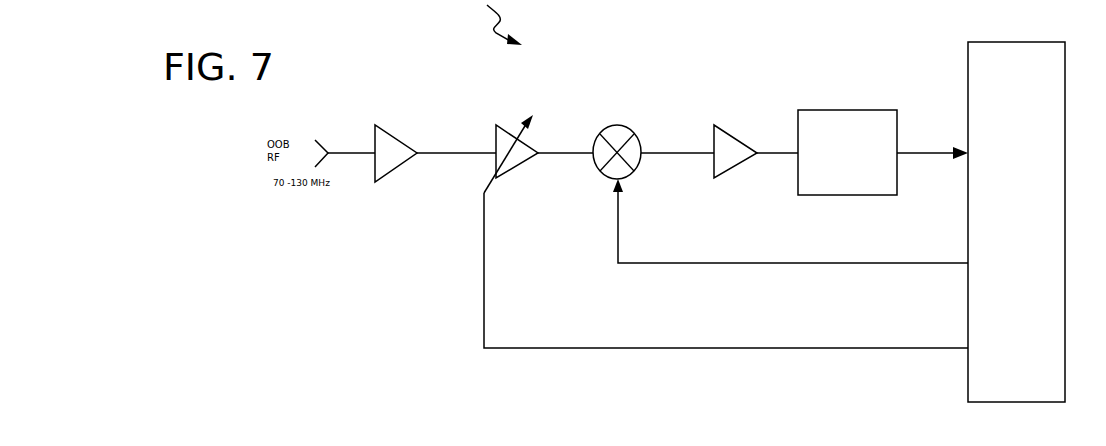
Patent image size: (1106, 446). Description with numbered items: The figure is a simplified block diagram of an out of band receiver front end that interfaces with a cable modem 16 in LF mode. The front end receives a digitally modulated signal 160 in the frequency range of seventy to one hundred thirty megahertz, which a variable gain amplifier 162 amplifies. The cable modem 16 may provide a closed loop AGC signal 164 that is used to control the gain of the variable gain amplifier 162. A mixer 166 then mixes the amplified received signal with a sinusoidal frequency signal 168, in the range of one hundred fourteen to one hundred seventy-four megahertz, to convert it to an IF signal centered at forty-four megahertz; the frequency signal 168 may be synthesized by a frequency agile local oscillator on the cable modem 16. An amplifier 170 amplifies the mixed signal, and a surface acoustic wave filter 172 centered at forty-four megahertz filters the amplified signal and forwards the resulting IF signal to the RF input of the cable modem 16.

The cable modem 16 is at (973, 95).
The digitally modulated signal 160 is at (352, 152).
The variable gain amplifier (VGA) 162 is at (500, 138).
The closed loop AGC signal 164 is at (602, 352).
The mixer 166 is at (615, 133).
The sinusoidal frequency signal 168 is at (878, 267).
The amplifier 170 is at (730, 128).
The surface acoustic wave (SAW) filter 172 is at (833, 110).